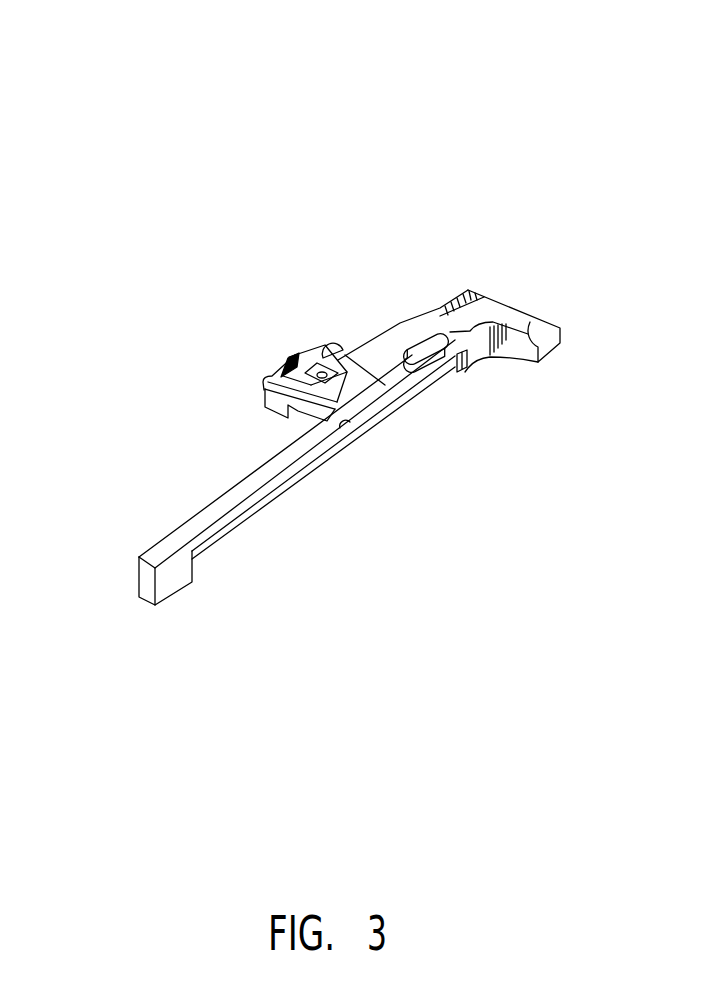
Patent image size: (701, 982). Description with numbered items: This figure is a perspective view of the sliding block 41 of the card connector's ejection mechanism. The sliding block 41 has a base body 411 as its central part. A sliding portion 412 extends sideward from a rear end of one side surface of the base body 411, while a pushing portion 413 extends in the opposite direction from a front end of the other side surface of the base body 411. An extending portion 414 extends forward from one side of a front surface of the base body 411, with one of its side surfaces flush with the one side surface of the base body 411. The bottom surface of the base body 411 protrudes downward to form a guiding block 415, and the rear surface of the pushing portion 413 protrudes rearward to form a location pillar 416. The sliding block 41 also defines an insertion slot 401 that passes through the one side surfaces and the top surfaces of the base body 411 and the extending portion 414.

The sliding block 41 is at (82, 46).
The insertion slot 401 is at (433, 380).
The base body 411 is at (392, 340).
The sliding portion 412 is at (528, 330).
The pushing portion 413 is at (288, 362).
The extending portion 414 is at (193, 522).
The guiding block 415 is at (428, 336).
The location pillar 416 is at (330, 343).